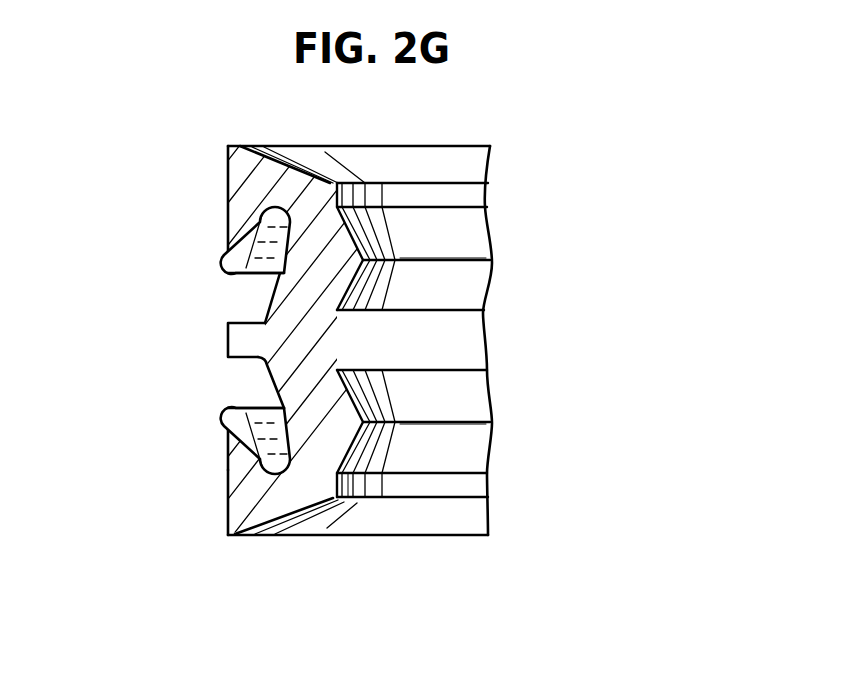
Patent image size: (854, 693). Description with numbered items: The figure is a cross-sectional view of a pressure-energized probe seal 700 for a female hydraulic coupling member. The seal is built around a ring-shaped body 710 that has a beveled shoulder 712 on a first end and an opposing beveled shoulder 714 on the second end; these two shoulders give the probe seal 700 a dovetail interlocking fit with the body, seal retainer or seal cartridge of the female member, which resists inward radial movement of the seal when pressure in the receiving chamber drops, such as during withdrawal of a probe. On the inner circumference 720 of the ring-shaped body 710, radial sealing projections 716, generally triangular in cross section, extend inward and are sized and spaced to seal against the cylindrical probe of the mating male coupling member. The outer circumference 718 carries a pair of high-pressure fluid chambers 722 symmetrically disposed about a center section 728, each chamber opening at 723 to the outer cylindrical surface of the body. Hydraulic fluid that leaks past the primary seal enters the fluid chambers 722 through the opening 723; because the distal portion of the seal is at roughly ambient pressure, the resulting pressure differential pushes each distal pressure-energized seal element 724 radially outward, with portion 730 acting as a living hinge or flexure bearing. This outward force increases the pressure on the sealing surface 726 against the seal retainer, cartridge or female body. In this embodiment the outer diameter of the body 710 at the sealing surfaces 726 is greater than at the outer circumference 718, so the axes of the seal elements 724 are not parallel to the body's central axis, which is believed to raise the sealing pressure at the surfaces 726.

The probe seal 700 is at (397, 142).
The ring-shaped body 710 is at (452, 353).
The beveled shoulder 712 is at (266, 147).
The opposing beveled shoulder 714 is at (265, 534).
The radial sealing projections 716 is at (460, 258).
The outer circumference 718 is at (228, 516).
The inner circumference 720 is at (374, 494).
The high-pressure fluid chambers 722 is at (257, 240).
The opening 723 is at (240, 300).
The pressure-energized seal element 724 is at (238, 280).
The sealing surface 726 is at (233, 257).
The center section 728 is at (236, 340).
The living hinge portion 730 is at (240, 221).